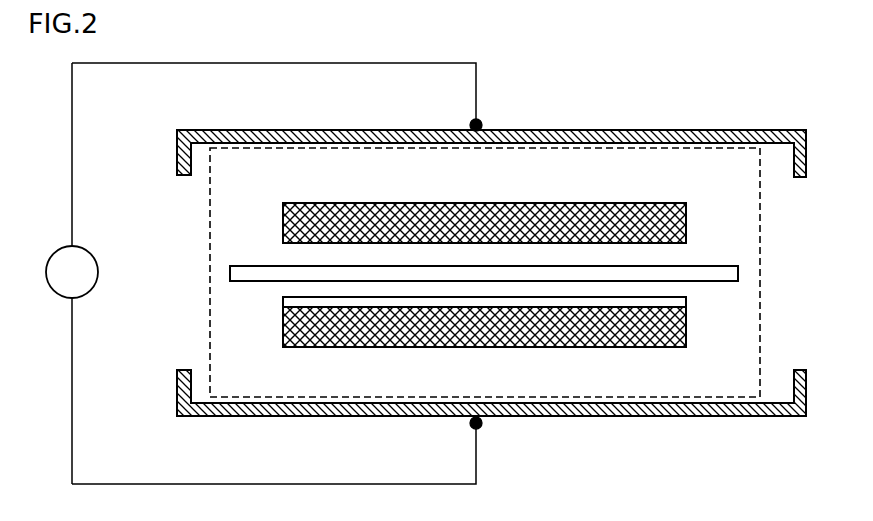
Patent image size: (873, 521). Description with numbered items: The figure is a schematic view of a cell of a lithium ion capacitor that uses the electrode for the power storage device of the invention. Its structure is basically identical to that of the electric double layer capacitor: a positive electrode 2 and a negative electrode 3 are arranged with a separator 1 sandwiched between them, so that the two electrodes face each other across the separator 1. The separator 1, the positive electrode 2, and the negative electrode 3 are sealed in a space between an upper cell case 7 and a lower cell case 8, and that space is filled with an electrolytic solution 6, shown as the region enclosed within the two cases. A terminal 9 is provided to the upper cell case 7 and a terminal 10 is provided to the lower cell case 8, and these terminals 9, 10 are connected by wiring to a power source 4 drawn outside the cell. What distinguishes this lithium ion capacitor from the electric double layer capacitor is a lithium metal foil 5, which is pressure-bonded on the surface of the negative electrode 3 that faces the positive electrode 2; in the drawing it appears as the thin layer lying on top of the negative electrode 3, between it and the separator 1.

The separator 1 is at (738, 273).
The positive electrode 2 is at (686, 223).
The negative electrode 3 is at (686, 330).
The power source 4 is at (56, 254).
The lithium metal foil 5 is at (686, 302).
The electrolytic solution 6 is at (230, 212).
The upper cell case 7 is at (652, 140).
The lower cell case 8 is at (651, 408).
The terminal 9 is at (481, 120).
The terminal 10 is at (481, 427).